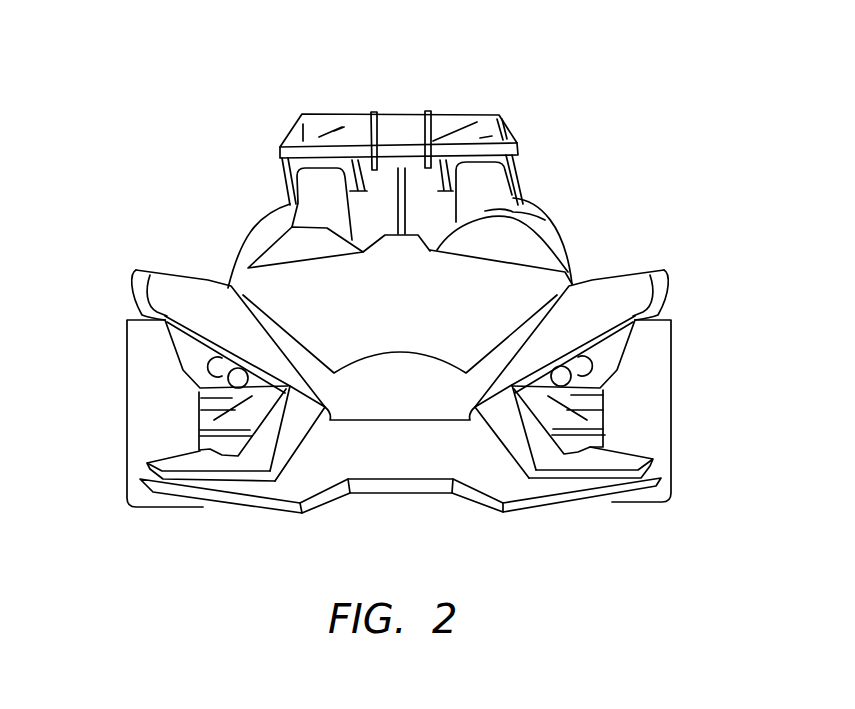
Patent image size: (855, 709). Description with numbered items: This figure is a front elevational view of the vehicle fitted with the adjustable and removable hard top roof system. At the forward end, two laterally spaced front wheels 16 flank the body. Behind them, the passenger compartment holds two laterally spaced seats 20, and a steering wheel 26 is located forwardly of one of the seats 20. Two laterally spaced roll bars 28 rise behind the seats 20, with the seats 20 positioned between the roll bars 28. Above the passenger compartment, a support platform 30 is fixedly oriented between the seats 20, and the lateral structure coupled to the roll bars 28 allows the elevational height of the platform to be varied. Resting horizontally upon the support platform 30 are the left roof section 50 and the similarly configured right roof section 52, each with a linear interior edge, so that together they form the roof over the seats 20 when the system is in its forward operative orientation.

The front wheels 16 is at (132, 396).
The seats 20 is at (300, 204).
The steering wheel 26 is at (562, 227).
The roll bars 28 is at (280, 174).
The support platform 30 is at (410, 110).
The left roof section 50 is at (458, 120).
The right roof section 52 is at (338, 113).